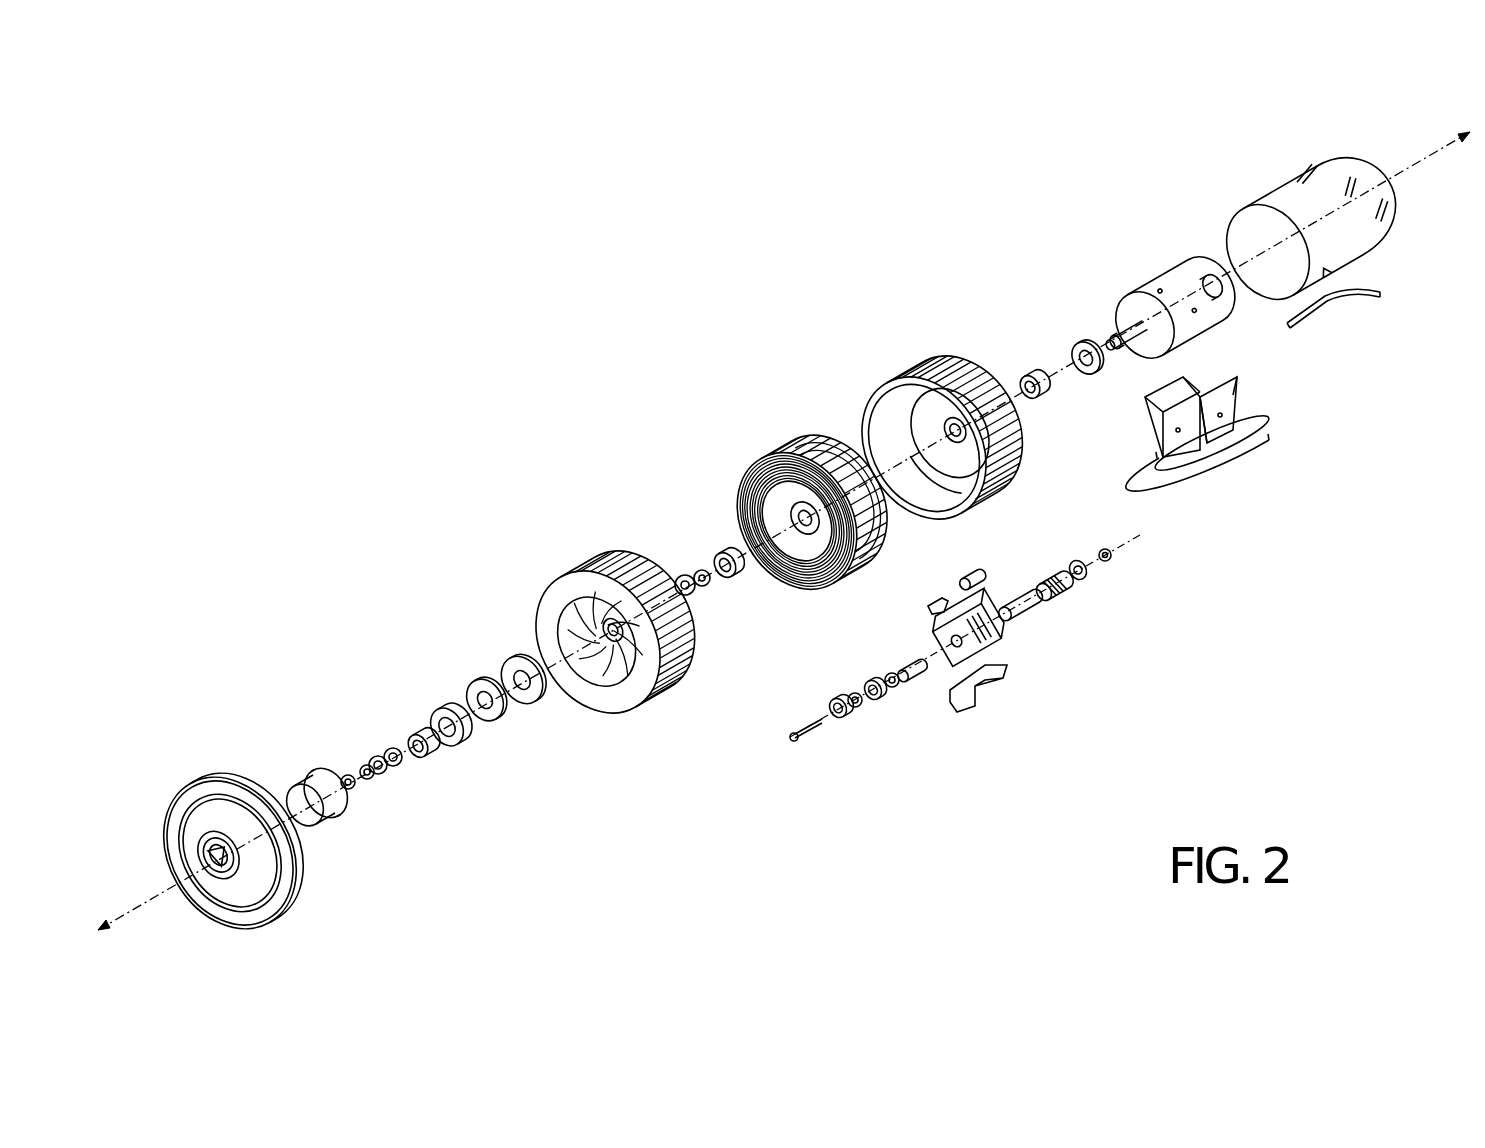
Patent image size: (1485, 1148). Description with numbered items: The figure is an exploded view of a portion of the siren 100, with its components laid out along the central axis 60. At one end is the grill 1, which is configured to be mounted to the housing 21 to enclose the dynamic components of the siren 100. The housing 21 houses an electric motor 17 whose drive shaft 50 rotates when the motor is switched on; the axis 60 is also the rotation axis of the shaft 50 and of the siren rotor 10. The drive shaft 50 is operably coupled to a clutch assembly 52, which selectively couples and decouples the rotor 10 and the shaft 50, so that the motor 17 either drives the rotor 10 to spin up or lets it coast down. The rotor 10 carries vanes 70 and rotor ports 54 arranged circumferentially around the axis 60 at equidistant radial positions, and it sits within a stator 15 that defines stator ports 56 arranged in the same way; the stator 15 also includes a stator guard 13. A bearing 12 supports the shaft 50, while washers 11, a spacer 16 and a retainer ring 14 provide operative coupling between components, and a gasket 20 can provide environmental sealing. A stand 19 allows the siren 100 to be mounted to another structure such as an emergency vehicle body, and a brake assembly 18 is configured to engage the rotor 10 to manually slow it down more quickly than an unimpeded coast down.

The grill 1 is at (193, 798).
The siren rotor 10 is at (631, 633).
The washers 11 is at (692, 554).
The bearing 12 is at (717, 542).
The stator guard 13 is at (810, 508).
The retainer ring 14 is at (813, 481).
The stator 15 is at (963, 415).
The spacer 16 is at (1015, 363).
The electric motor 17 is at (1140, 269).
The brake assembly 18 is at (1195, 595).
The stand 19 is at (1264, 459).
The gasket 20 is at (1319, 331).
The housing 21 is at (1207, 225).
The drive shaft 50 is at (1113, 334).
The clutch assembly 52 is at (515, 603).
The rotor ports 54 is at (688, 659).
The stator ports 56 is at (1018, 455).
The central axis 60 is at (1417, 162).
The vanes 70 is at (597, 662).
The siren 100 is at (514, 231).